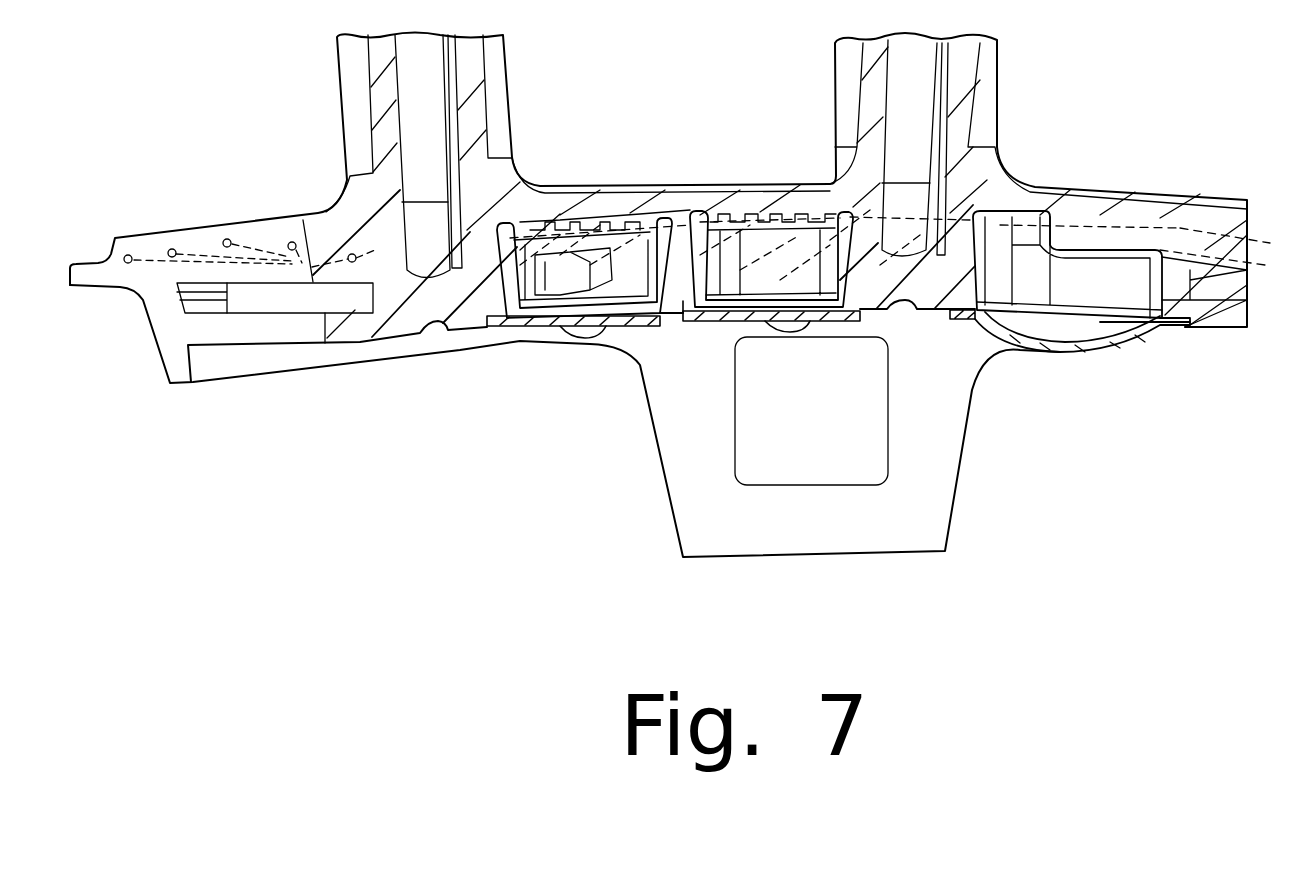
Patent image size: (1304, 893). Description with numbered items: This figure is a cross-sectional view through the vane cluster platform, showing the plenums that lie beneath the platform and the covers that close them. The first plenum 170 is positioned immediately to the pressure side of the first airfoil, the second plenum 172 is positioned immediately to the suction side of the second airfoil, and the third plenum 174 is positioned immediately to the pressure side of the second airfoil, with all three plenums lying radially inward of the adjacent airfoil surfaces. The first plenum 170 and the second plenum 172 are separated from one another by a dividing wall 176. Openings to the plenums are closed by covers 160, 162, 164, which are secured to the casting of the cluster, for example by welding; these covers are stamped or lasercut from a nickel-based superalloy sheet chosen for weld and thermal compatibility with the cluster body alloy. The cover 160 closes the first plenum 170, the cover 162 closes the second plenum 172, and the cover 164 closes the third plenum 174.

The cover 160 is at (493, 348).
The cover 162 is at (840, 320).
The cover 164 is at (1165, 330).
The first plenum 170 is at (606, 258).
The second plenum 172 is at (748, 262).
The third plenum 174 is at (1000, 260).
The dividing wall 176 is at (675, 315).